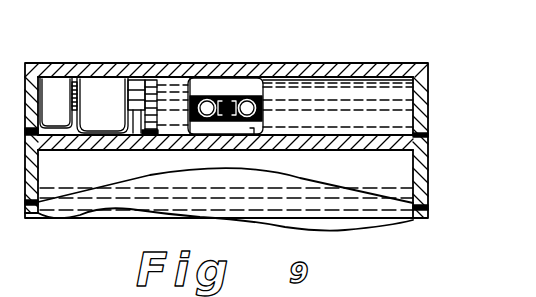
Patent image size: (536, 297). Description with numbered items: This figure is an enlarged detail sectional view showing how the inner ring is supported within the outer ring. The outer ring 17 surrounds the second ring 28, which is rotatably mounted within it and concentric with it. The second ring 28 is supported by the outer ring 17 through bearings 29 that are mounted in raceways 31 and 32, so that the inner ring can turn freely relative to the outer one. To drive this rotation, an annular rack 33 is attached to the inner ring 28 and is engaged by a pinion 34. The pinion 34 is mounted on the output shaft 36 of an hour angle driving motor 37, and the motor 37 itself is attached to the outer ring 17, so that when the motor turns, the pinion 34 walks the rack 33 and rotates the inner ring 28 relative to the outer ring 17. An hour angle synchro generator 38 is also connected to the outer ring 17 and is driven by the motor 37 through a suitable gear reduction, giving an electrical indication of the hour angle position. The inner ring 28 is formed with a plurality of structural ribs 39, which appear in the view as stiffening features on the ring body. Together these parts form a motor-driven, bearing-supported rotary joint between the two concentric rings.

The outer ring 17 is at (370, 75).
The second ring 28 is at (418, 152).
The bearings 29 is at (221, 91).
The raceway 31 is at (200, 88).
The raceway 32 is at (252, 130).
The annular rack 33 is at (147, 136).
The pinion 34 is at (157, 96).
The output shaft 36 is at (137, 100).
The hour angle driving motor 37 is at (88, 97).
The hour angle synchro generator 38 is at (52, 90).
The structural ribs 39 is at (403, 174).